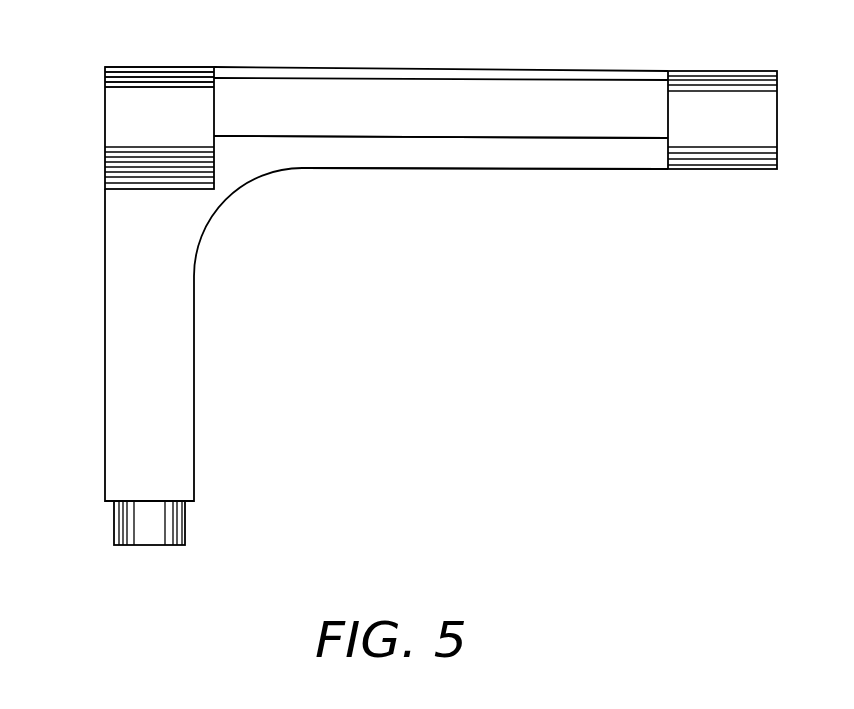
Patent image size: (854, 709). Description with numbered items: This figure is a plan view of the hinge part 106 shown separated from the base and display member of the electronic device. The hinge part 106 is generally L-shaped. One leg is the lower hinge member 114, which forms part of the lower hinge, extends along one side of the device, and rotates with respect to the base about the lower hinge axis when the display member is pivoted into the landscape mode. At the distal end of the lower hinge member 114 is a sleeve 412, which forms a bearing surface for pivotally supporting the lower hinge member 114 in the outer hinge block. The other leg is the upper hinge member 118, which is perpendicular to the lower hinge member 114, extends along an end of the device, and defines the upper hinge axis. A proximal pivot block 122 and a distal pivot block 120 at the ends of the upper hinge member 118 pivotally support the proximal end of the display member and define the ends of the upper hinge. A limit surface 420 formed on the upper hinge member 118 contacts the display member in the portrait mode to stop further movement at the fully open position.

The hinge part 106 is at (119, 118).
The lower hinge member 114 is at (104, 345).
The upper hinge member 118 is at (495, 157).
The distal pivot block 120 is at (713, 80).
The proximal pivot block 122 is at (150, 75).
The sleeve 412 is at (127, 523).
The limit surface 420 is at (432, 70).